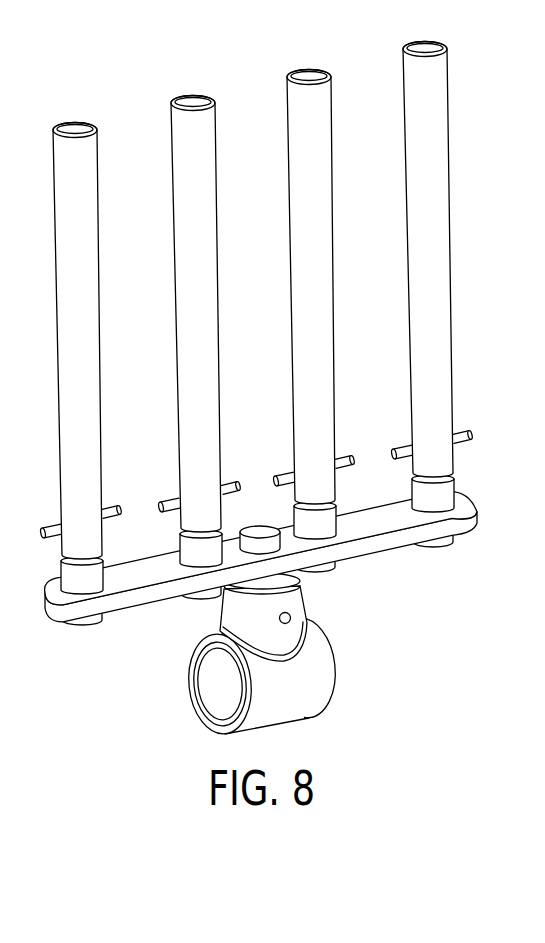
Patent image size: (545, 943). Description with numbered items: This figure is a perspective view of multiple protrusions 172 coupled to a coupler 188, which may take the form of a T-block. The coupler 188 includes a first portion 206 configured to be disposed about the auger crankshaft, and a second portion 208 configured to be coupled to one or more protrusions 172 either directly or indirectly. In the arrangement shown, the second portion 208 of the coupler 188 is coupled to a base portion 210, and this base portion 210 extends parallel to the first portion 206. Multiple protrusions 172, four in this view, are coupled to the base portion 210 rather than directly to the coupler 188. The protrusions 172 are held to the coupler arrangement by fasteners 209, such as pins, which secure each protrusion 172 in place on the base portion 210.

The protrusions 172 is at (183, 279).
The coupler 188 is at (246, 652).
The first portion 206 is at (337, 662).
The second portion 208 is at (302, 600).
The fasteners 209 is at (162, 507).
The base portion 210 is at (388, 542).